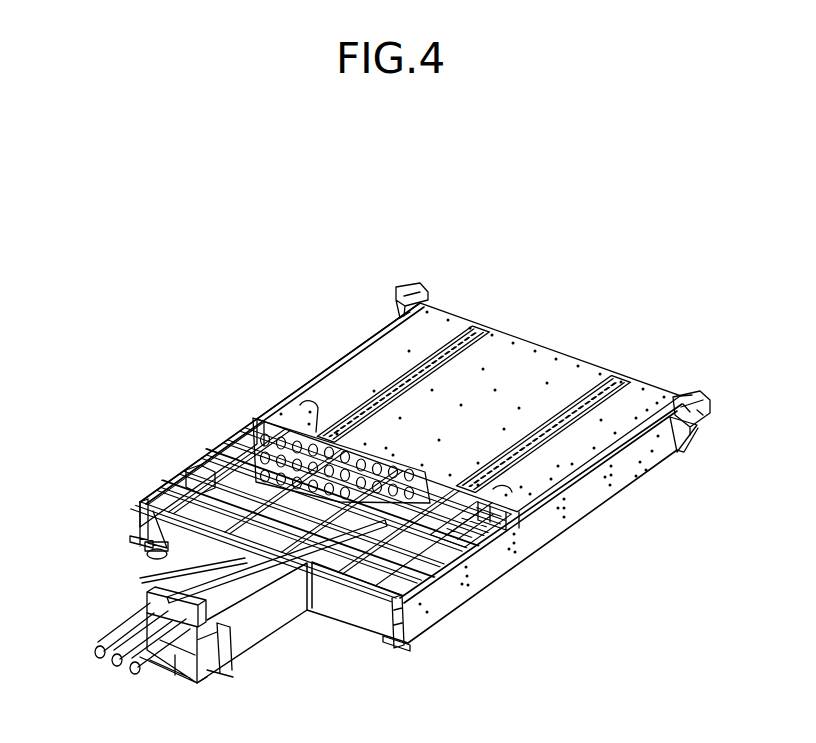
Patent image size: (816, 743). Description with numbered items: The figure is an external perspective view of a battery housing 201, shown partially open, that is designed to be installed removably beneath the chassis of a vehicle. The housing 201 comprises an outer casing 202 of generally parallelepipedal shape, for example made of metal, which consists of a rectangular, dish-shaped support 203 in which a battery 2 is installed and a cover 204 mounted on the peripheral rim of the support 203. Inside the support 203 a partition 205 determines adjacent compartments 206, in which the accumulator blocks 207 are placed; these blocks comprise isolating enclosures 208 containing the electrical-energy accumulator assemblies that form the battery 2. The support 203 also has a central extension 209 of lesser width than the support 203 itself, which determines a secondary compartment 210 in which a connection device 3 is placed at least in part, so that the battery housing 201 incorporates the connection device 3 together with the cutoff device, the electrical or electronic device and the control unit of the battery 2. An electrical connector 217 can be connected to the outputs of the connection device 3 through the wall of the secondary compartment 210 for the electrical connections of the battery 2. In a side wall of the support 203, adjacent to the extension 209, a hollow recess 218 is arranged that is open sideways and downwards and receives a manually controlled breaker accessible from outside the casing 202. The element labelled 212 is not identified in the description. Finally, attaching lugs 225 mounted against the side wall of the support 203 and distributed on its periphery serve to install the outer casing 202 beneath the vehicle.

The battery 2 is at (407, 463).
The connection device 3 is at (147, 608).
The battery housing 201 is at (199, 384).
The outer casing 202 is at (649, 388).
The support 203 is at (484, 591).
The cover 204 is at (545, 348).
The partition 205 is at (256, 446).
The compartments 206 is at (236, 466).
The accumulator blocks 207 is at (250, 522).
The isolating enclosures 208 is at (143, 519).
The central extension 209 is at (246, 637).
The secondary compartment 210 is at (183, 574).
The mounting bracket 212 is at (512, 537).
The electrical connector 217 is at (172, 668).
The hollow recess 218 is at (150, 549).
The attaching lugs 225 is at (410, 291).